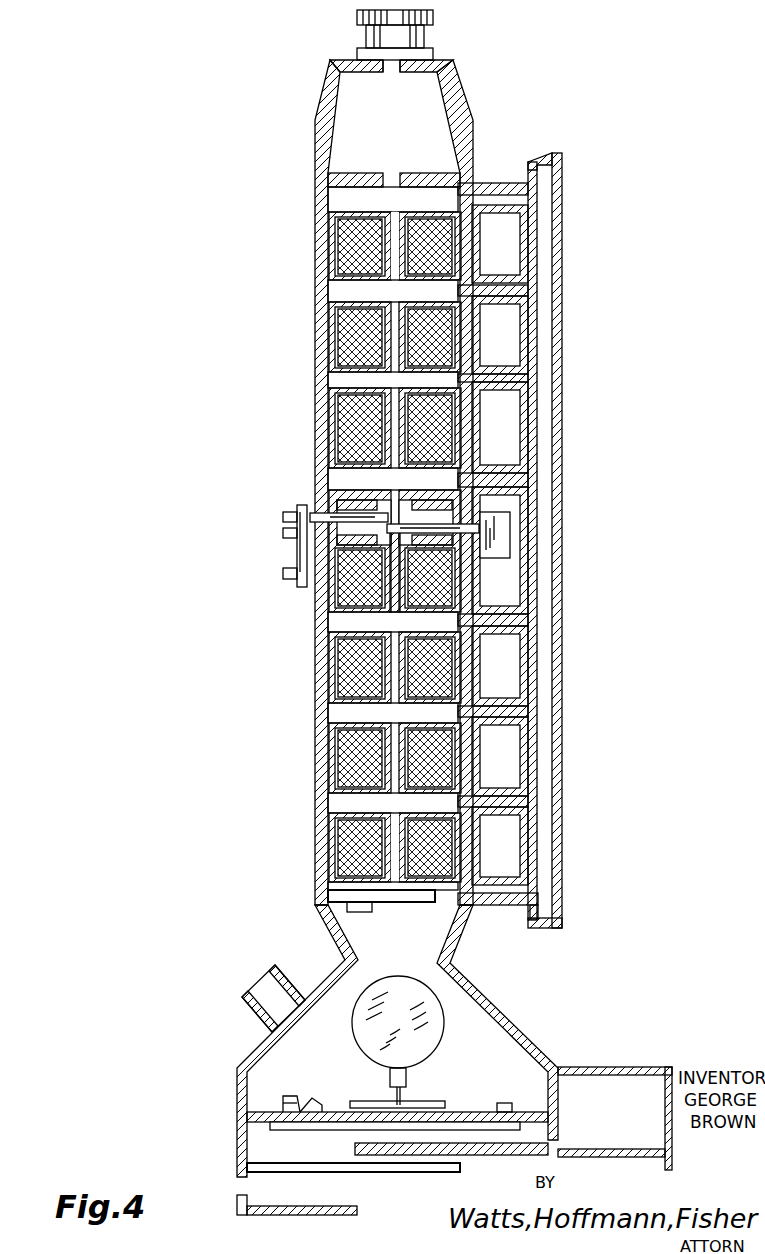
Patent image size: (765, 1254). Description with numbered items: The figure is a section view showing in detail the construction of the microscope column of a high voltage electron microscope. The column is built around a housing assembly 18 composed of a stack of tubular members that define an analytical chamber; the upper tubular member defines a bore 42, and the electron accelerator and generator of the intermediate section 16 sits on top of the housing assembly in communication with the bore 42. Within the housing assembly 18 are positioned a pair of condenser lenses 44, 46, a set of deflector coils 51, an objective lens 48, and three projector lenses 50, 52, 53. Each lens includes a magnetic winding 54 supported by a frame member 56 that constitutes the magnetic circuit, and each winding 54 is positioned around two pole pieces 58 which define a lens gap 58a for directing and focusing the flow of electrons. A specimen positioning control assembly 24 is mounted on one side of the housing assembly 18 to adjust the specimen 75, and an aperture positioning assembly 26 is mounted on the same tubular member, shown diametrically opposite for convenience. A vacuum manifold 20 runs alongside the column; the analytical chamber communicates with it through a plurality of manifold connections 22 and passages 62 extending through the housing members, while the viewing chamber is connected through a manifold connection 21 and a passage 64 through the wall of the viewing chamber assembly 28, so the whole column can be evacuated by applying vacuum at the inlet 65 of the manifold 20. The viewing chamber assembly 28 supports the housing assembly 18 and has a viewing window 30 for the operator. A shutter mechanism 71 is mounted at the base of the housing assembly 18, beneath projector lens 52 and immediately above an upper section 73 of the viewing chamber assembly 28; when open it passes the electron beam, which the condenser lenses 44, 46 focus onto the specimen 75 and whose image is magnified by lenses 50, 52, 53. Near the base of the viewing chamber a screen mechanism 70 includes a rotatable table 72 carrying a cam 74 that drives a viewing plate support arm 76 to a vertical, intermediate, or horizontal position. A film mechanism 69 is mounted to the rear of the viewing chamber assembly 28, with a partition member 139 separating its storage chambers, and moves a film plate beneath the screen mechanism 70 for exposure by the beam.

The intermediate section 16 is at (425, 38).
The housing assembly 18 is at (330, 183).
The vacuum manifold 20 is at (562, 252).
The manifold connection 21 is at (505, 930).
The manifold connections 22 is at (500, 230).
The specimen positioning control assembly 24 is at (296, 548).
The aperture positioning assembly 26 is at (510, 528).
The viewing chamber assembly 28 is at (237, 1128).
The viewing window 30 is at (262, 1015).
The bore 42 is at (471, 185).
The condenser lens 44 is at (318, 265).
The condenser lens 46 is at (318, 352).
The objective lens 48 is at (318, 600).
The projector lens 50 is at (318, 672).
The deflector coils 51 is at (318, 432).
The projector lens 52 is at (318, 828).
The projector lens 53 is at (318, 744).
The magnetic winding 54 is at (340, 322).
The frame member 56 is at (333, 245).
The pole pieces 58 is at (392, 214).
The lens gap 58a is at (455, 240).
The passages 62 is at (492, 196).
The passage 64 is at (316, 160).
The inlet 65 is at (537, 168).
The film mechanism 69 is at (608, 1067).
The screen mechanism 70 is at (415, 1093).
The shutter mechanism 71 is at (330, 895).
The rotatable table 72 is at (450, 1110).
The upper section 73 is at (462, 955).
The cam 74 is at (288, 1100).
The specimen 75 is at (393, 514).
The viewing plate support arm 76 is at (320, 1108).
The partition member 139 is at (578, 1148).